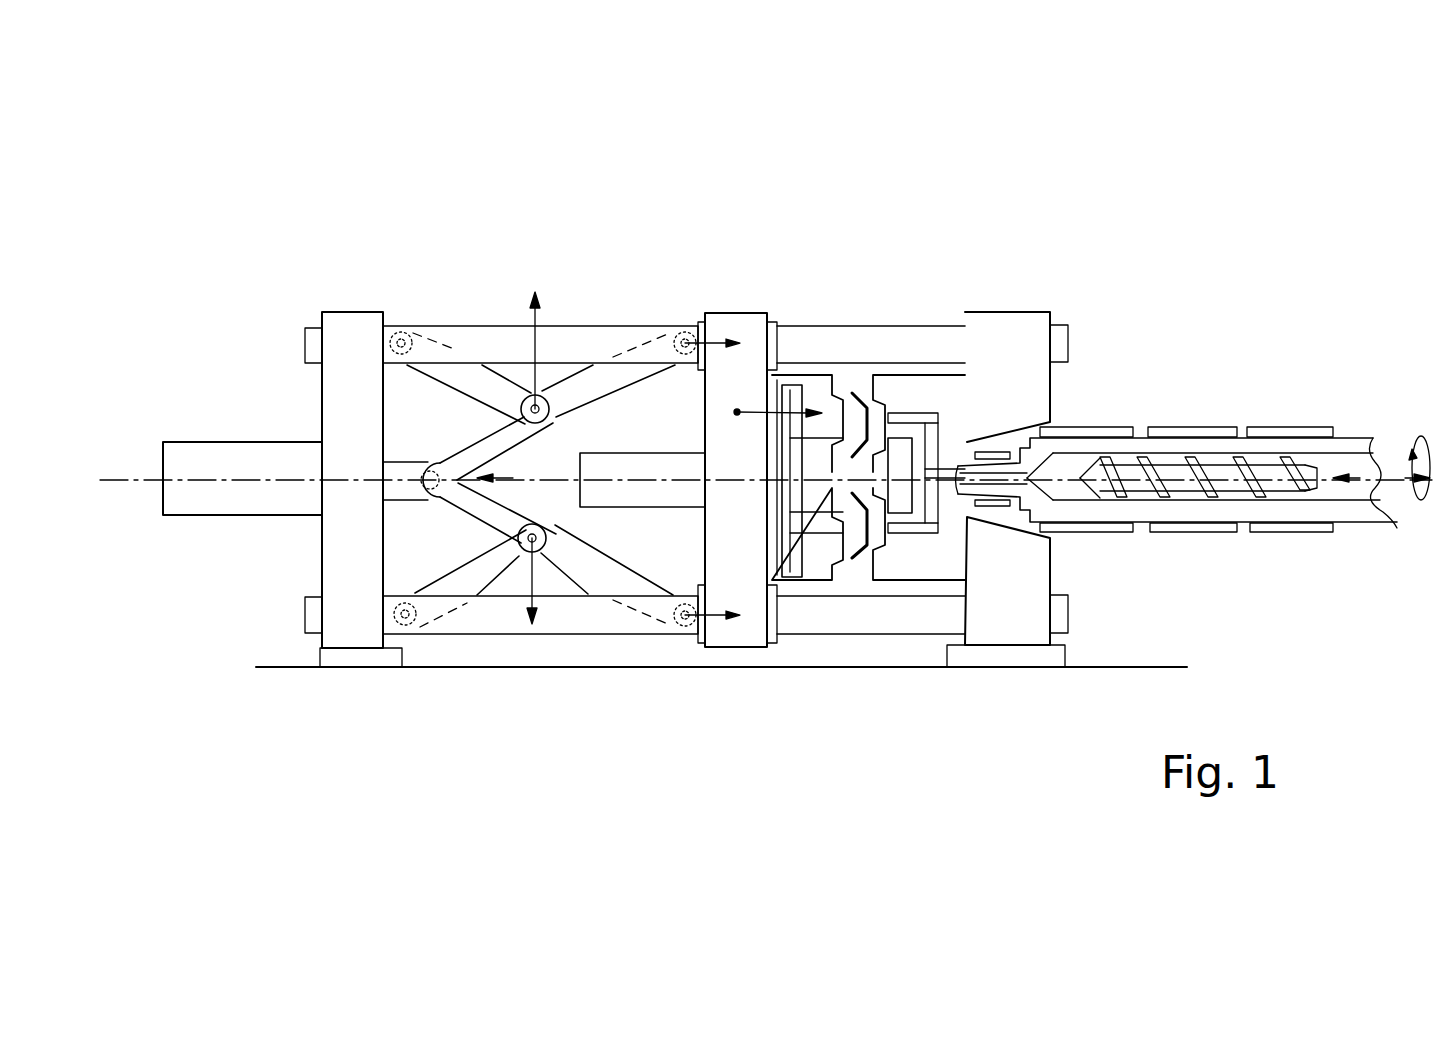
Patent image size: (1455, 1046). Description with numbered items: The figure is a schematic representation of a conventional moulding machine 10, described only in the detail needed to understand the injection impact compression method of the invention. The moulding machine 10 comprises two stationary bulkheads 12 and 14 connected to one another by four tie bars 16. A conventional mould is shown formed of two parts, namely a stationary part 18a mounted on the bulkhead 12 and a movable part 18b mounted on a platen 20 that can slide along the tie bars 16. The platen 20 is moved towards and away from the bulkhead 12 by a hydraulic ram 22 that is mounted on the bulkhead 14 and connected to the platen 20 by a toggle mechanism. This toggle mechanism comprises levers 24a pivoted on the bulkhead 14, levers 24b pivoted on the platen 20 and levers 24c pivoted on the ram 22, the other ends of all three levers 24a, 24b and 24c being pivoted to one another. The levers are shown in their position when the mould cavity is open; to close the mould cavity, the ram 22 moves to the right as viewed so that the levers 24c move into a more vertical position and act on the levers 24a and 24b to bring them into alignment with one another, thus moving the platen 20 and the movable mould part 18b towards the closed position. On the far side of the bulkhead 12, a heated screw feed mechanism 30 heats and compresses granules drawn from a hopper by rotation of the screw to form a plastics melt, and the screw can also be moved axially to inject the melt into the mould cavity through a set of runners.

The moulding machine 10 is at (946, 212).
The stationary bulkhead 12 is at (1005, 332).
The stationary bulkhead 14 is at (343, 328).
The tie bars 16 is at (500, 332).
The stationary mould part 18a is at (918, 393).
The movable mould part 18b is at (813, 385).
The platen 20 is at (718, 317).
The hydraulic ram 22 is at (267, 503).
The levers 24a is at (463, 370).
The levers 24b is at (604, 368).
The levers 24c is at (480, 442).
The heated screw feed mechanism 30 is at (1223, 427).